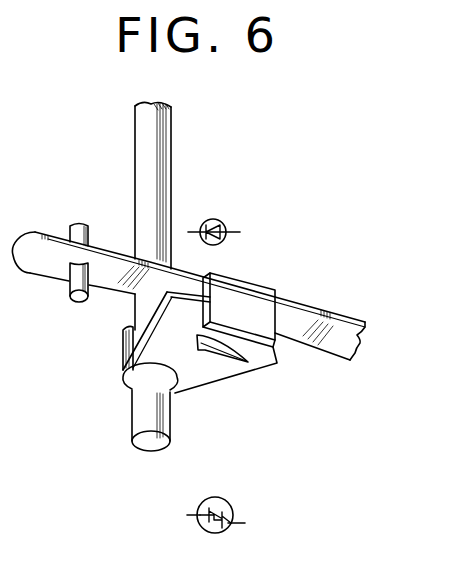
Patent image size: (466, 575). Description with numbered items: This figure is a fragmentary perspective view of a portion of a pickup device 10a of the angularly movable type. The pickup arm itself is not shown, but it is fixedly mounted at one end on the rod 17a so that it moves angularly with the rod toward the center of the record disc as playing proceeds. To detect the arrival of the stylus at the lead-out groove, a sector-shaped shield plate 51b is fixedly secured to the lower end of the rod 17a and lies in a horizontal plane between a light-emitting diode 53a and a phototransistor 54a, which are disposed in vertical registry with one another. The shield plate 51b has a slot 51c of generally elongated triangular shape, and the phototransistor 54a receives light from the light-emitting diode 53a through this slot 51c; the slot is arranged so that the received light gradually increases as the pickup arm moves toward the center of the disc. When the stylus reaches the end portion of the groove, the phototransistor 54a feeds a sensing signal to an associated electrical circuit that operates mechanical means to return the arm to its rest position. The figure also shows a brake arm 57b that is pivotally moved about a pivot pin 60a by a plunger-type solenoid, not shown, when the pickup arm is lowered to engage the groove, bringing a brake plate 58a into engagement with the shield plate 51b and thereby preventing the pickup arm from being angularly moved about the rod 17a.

The rod 17a is at (133, 145).
The pickup device 10a is at (245, 150).
The light-emitting diode 53a is at (222, 216).
The brake plate 58a is at (255, 297).
The brake arm 57b is at (343, 316).
The pivot pin 60a is at (80, 298).
The slot 51c is at (215, 353).
The shield plate 51b is at (197, 392).
The phototransistor 54a is at (236, 506).